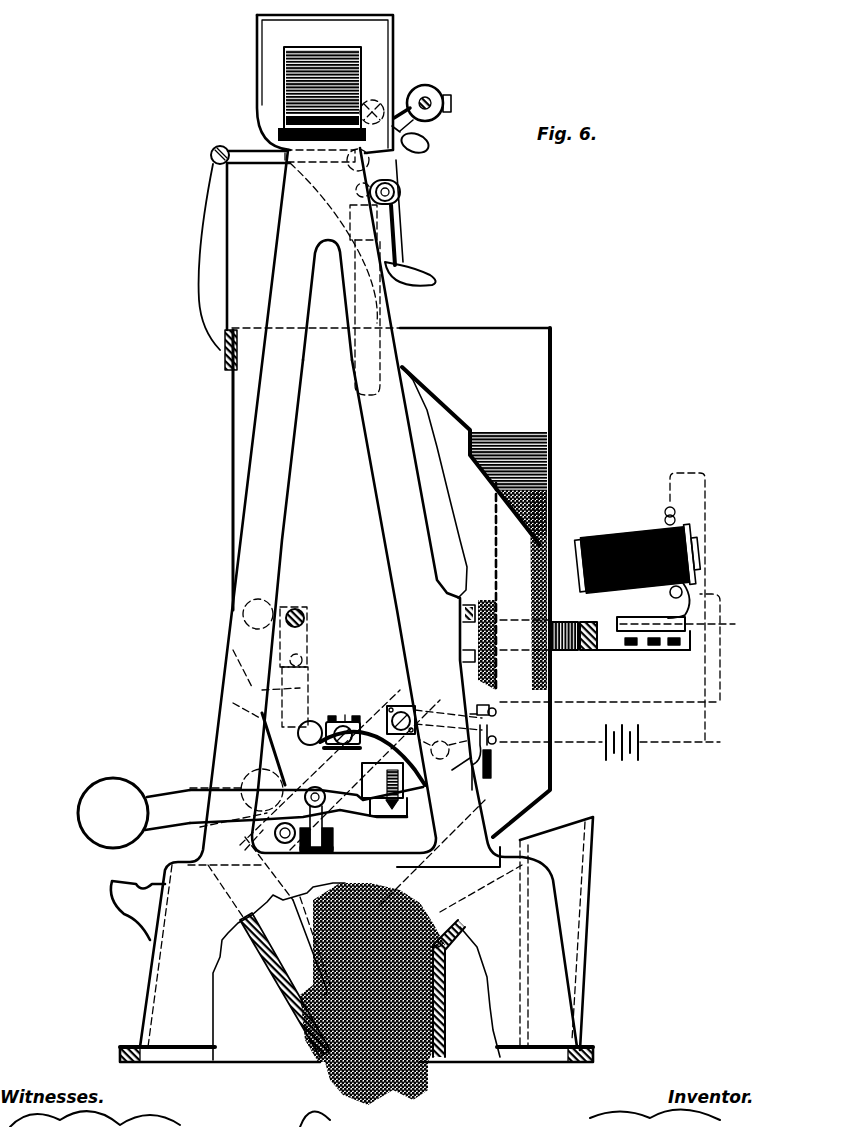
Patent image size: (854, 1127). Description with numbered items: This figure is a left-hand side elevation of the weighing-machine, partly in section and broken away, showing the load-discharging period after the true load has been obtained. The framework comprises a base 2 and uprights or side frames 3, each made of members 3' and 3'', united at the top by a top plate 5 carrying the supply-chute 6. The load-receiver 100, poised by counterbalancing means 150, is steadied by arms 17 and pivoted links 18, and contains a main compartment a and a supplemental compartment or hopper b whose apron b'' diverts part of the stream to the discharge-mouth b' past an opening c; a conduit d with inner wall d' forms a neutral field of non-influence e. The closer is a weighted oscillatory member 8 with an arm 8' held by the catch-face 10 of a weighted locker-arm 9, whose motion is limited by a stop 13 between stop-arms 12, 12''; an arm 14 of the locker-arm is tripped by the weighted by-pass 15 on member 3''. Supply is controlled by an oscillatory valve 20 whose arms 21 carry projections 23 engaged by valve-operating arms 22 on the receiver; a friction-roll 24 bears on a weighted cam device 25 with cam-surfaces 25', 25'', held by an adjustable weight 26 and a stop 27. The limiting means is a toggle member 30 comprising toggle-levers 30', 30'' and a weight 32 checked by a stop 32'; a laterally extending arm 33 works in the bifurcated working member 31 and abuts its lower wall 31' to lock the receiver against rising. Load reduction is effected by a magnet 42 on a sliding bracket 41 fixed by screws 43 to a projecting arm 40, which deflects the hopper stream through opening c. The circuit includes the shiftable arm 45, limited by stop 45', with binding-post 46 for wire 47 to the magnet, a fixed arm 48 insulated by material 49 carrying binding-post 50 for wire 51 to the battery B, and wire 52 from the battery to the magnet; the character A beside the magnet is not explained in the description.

The base 2 is at (150, 978).
The upright or side frame 3 is at (358, 597).
The side frame member 3' is at (343, 546).
The side frame member 3'' is at (432, 482).
The top plate 5 is at (322, 94).
The chute 6 is at (325, 84).
The weighted oscillatory member 8 is at (326, 971).
The arm 8' is at (318, 820).
The weighted catch or locker-arm 9 is at (340, 770).
The catch-face 10 is at (308, 746).
The stop-arm 12 is at (336, 720).
The stop-arm 12'' is at (430, 707).
The stop 13 is at (349, 722).
The arm 14 is at (307, 801).
The weighted by-pass 15 is at (455, 774).
The arms 17 is at (210, 257).
The pivoted links 18 is at (262, 163).
The oscillatory valve 20 is at (417, 283).
The valve-arm 21 is at (397, 230).
The valve-operating arm 22 is at (355, 305).
The projection 23 is at (396, 188).
The friction-roll 24 is at (405, 138).
The weighted cam device 25 is at (439, 145).
The cam-surface 25' is at (440, 157).
The cam-surface 25'' is at (328, 171).
The adjustable weight 26 is at (444, 97).
The stop 27 is at (396, 112).
The toggle member 30 is at (310, 656).
The toggle-lever 30' is at (312, 637).
The toggle-lever 30'' is at (264, 691).
The working member 31 is at (319, 685).
The lower wall 31' is at (245, 774).
The weight 32 is at (272, 602).
The stop 32' is at (222, 659).
The laterally-extending arm 33 is at (259, 744).
The projecting arm 40 is at (570, 630).
The sliding bracket 41 is at (684, 624).
The magnet 42 is at (655, 534).
The screws 43 is at (648, 648).
The shiftable controller arm 45 is at (482, 713).
The stop 45' is at (445, 745).
The binding-post 46 is at (502, 645).
The wire 47 is at (610, 694).
The arm 48 is at (494, 770).
The insulating material 49 is at (490, 790).
The binding-post 50 is at (497, 740).
The wire 51 is at (551, 738).
The wire 52 is at (680, 738).
The load-receiver 100 is at (236, 468).
The counterbalancing means 150 is at (136, 813).
The main compartment a is at (457, 474).
The supplemental compartment b is at (521, 582).
The discharge-mouth b' is at (520, 546).
The apron or wall b'' is at (471, 445).
The opening c is at (553, 540).
The conduit d is at (485, 611).
The inner wall d' is at (477, 586).
The neutral space or field of non-influence e is at (518, 600).
The electric circuit A is at (695, 606).
The battery B is at (622, 754).